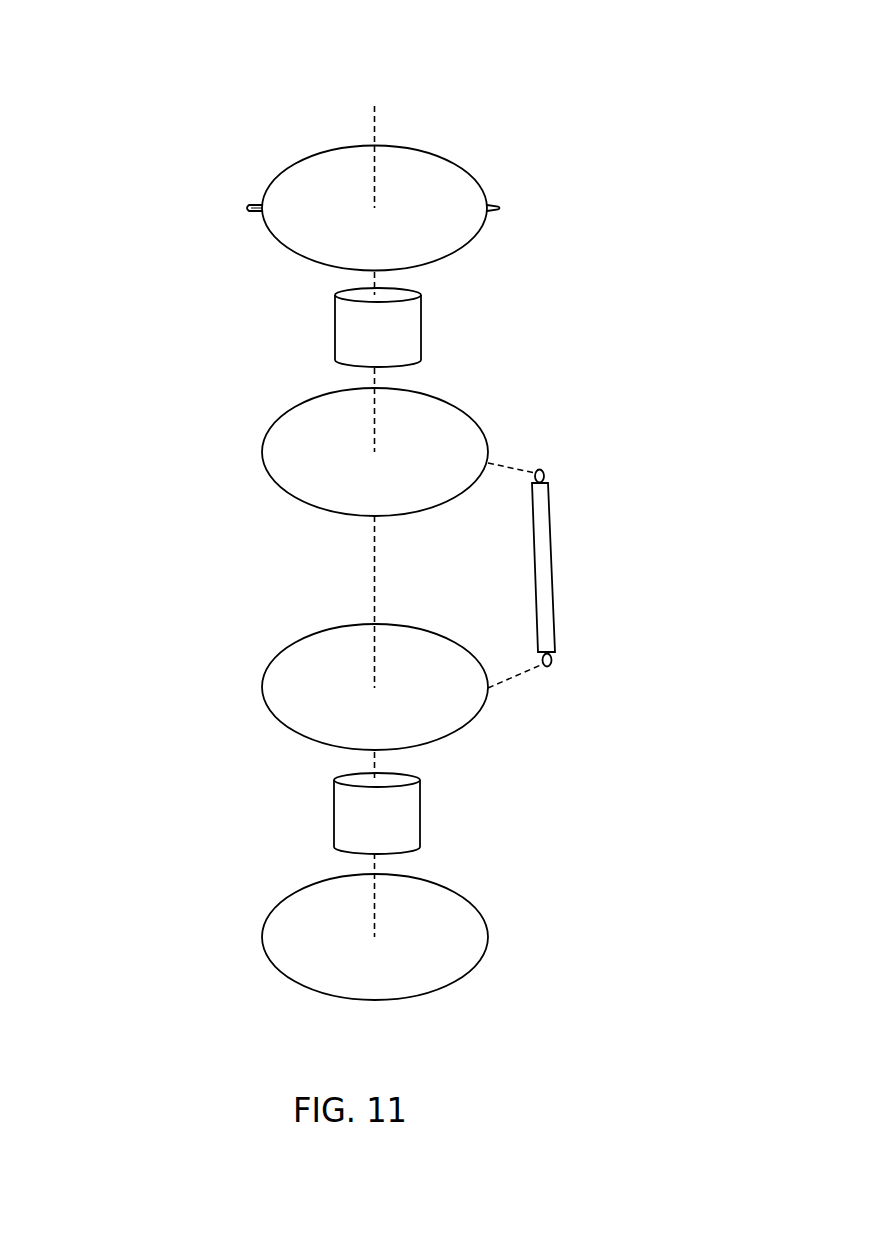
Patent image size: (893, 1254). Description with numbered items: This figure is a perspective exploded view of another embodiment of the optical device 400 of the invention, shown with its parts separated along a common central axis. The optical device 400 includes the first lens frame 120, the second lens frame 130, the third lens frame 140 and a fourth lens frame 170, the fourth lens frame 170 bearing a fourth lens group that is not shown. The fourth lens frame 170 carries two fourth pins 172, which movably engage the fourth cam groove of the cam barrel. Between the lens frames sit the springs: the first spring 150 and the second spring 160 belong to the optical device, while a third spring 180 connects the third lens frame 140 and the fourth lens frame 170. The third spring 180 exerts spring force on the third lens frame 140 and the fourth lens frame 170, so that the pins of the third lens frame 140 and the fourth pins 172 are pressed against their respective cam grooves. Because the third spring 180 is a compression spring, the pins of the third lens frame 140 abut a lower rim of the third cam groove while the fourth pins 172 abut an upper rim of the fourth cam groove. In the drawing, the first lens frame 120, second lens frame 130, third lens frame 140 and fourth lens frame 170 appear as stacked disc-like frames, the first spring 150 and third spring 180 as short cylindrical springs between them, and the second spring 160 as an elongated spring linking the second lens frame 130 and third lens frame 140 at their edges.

The optical device 400 is at (401, 33).
The first lens frame 120 is at (260, 937).
The second lens frame 130 is at (260, 688).
The third lens frame 140 is at (260, 453).
The first spring 150 is at (398, 818).
The second spring 160 is at (545, 575).
The fourth lens frame 170 is at (273, 235).
The fourth pins 172 is at (248, 203).
The third spring 180 is at (402, 327).